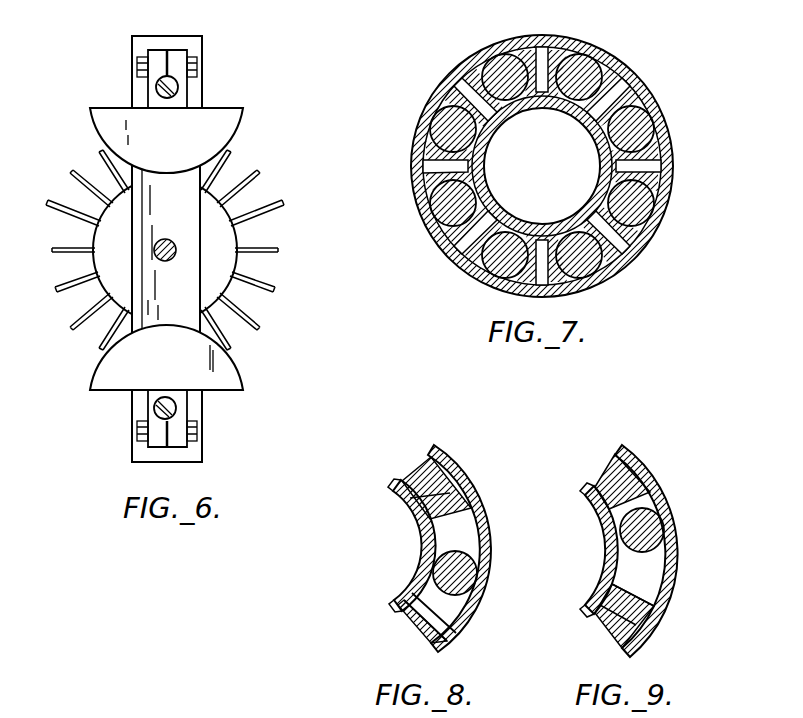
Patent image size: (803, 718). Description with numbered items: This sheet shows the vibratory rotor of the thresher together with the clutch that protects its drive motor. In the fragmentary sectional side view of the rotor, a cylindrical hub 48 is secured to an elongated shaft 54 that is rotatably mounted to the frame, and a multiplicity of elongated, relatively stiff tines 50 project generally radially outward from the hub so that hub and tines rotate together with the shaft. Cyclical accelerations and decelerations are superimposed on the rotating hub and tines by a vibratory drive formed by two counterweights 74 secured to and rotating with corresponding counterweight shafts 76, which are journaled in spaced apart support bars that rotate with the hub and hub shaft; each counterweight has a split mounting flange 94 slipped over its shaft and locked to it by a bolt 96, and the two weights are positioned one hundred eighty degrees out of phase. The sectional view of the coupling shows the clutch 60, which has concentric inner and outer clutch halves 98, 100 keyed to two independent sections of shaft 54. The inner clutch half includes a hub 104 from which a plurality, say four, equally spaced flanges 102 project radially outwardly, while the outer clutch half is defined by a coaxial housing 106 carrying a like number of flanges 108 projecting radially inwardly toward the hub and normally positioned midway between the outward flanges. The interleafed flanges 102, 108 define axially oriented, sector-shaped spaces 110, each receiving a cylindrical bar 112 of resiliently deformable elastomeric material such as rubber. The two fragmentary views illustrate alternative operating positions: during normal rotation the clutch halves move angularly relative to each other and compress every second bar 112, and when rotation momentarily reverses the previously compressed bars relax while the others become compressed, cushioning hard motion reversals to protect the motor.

In FIG. 6, the hub 48 is at (196, 250).
In FIG. 6, the tines 50 is at (229, 156).
In FIG. 6, the shaft 54 is at (163, 239).
In FIG. 6, the counterweights 74 is at (235, 128).
In FIG. 6, the counterweight shafts 76 is at (178, 92).
In FIG. 6, the bolt 94 is at (177, 60).
In FIG. 6, the bolt 96 is at (197, 60).
In FIG. 7, the clutch 60 is at (553, 164).
In FIG. 7, the inner clutch half 98 is at (520, 121).
In FIG. 7, the outer clutch half 100 is at (601, 44).
In FIG. 7, the flanges 102 is at (458, 267).
In FIG. 8, the flanges 102 is at (418, 627).
In FIG. 9, the flanges 102 is at (637, 462).
In FIG. 7, the hub 104 is at (478, 157).
In FIG. 8, the hub 104 is at (408, 517).
In FIG. 9, the hub 104 is at (611, 553).
In FIG. 7, the housing 106 is at (640, 88).
In FIG. 8, the housing 106 is at (452, 452).
In FIG. 9, the housing 106 is at (677, 537).
In FIG. 7, the flanges 108 is at (538, 63).
In FIG. 8, the flanges 108 is at (478, 510).
In FIG. 9, the flanges 108 is at (643, 585).
In FIG. 7, the sector-shaped spaces 110 is at (465, 247).
In FIG. 8, the sector-shaped spaces 110 is at (458, 632).
In FIG. 9, the sector-shaped spaces 110 is at (655, 570).
In FIG. 7, the cylindrical bar 112 is at (497, 73).
In FIG. 8, the cylindrical bar 112 is at (448, 590).
In FIG. 9, the cylindrical bar 112 is at (647, 513).